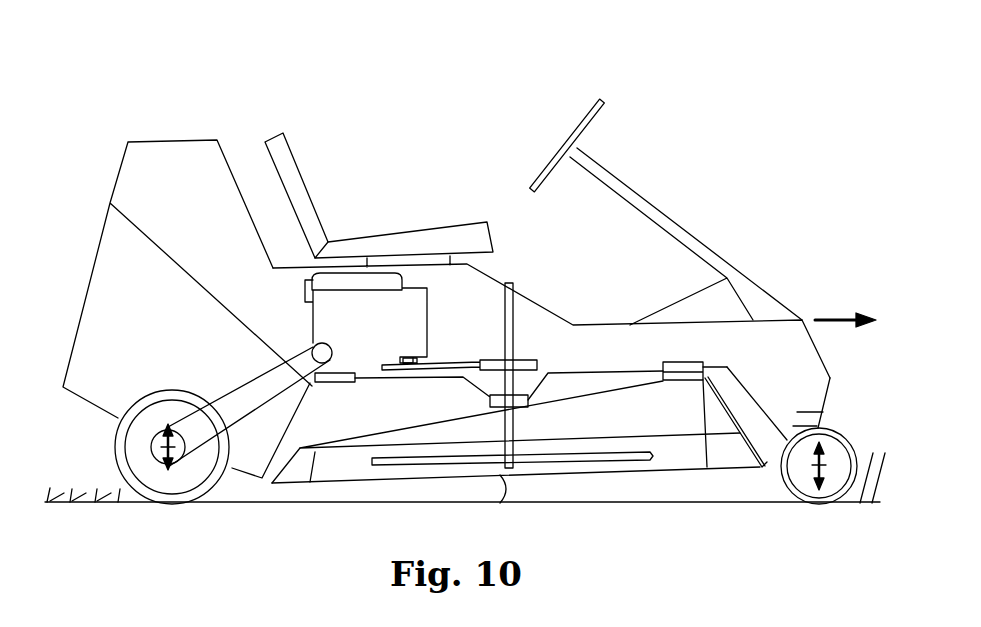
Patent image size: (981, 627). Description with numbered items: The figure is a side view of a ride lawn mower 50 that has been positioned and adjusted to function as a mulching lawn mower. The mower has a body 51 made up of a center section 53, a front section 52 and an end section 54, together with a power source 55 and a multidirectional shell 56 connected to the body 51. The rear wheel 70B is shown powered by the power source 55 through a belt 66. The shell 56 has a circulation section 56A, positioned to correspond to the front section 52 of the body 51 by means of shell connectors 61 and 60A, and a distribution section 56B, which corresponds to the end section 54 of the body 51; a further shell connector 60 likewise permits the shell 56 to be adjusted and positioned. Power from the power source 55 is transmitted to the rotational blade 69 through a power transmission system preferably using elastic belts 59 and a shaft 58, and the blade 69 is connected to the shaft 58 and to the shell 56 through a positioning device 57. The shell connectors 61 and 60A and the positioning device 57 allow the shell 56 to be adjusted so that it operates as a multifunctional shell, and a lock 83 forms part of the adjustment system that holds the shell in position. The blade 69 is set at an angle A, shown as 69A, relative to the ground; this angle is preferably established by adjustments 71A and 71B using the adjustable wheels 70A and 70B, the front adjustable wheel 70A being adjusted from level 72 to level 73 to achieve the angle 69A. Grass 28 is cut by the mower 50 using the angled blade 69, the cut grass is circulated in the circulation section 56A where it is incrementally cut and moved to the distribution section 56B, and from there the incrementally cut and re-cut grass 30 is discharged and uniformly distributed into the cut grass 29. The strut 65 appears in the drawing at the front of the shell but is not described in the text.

The grass 28 is at (866, 505).
The cut grass 29 is at (103, 487).
The incrementally cut and re-cut grass 30 is at (60, 502).
The ride lawn mower 50 is at (741, 85).
The body 51 is at (168, 142).
The front section 52 is at (752, 347).
The center section 53 is at (507, 327).
The end section 54 is at (215, 260).
The power source 55 is at (347, 267).
The multidirectional shell 56 is at (572, 476).
The circulation section 56A is at (678, 433).
The distribution section 56B is at (400, 440).
The positioning device 57 is at (528, 400).
The shaft 58 is at (500, 425).
The elastic belts 59 is at (443, 362).
The shell connector 60 is at (330, 383).
The shell connector 60A is at (688, 382).
The shell connector 61 is at (685, 362).
The front strut 65 is at (733, 422).
The belt 66 is at (238, 387).
The rotational blade 69 is at (598, 462).
The angle A 69A is at (510, 490).
The adjustable wheel 70A is at (821, 503).
The adjustable wheel 70B is at (172, 500).
The adjustment 71A is at (808, 468).
The adjustment 71B is at (153, 452).
The level 72 is at (808, 411).
The level 73 is at (822, 425).
The lock 83 is at (327, 344).